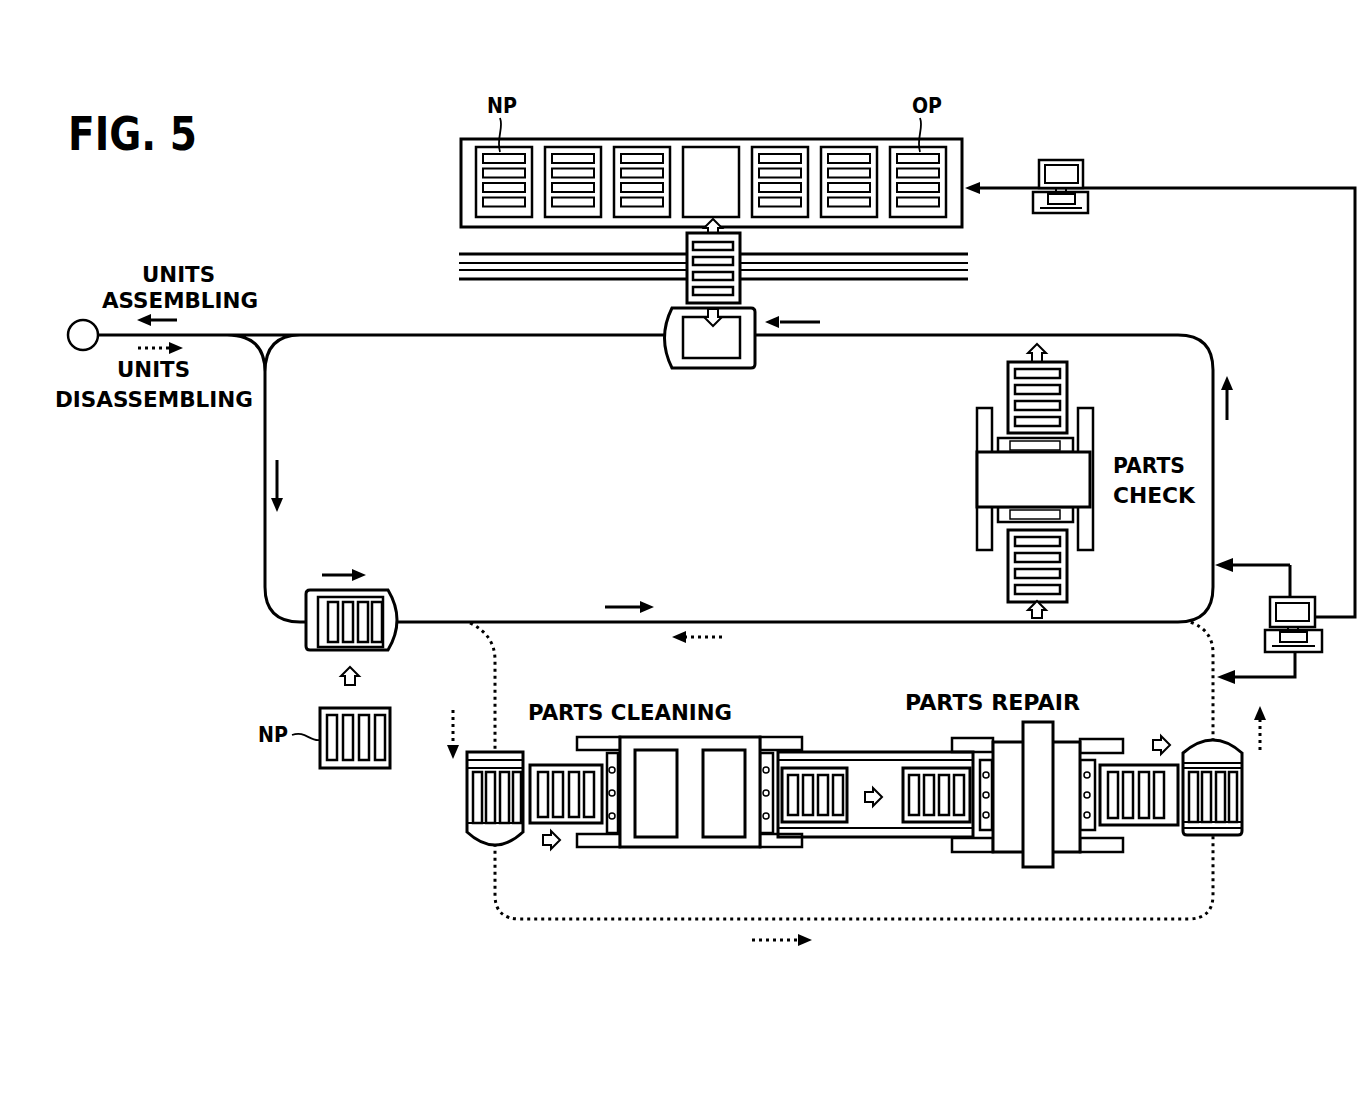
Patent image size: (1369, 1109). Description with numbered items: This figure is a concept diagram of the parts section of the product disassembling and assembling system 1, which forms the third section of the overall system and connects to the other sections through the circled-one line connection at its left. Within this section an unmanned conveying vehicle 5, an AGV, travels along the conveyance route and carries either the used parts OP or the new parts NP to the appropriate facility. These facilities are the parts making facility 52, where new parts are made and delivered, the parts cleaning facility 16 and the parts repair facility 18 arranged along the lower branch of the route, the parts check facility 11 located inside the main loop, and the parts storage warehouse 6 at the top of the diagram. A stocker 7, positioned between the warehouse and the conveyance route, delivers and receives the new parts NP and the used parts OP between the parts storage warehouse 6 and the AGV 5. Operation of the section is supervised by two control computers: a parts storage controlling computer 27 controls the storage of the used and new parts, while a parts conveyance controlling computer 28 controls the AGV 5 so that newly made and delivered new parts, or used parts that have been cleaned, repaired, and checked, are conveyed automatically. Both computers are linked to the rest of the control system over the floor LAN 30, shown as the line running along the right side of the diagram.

The system 1 is at (1236, 156).
The unmanned conveying vehicle 5 is at (1278, 823).
The parts storage warehouse 6 is at (650, 139).
The stocker 7 is at (687, 293).
The parts check facility 11 is at (977, 475).
The parts cleaning facility 16 is at (757, 737).
The parts repair facility 18 is at (1118, 738).
The parts storage controlling computer 27 is at (1305, 597).
The parts conveyance controlling computer 28 is at (1083, 170).
The floor LAN 30 is at (1355, 318).
The parts making facility 52 is at (232, 786).